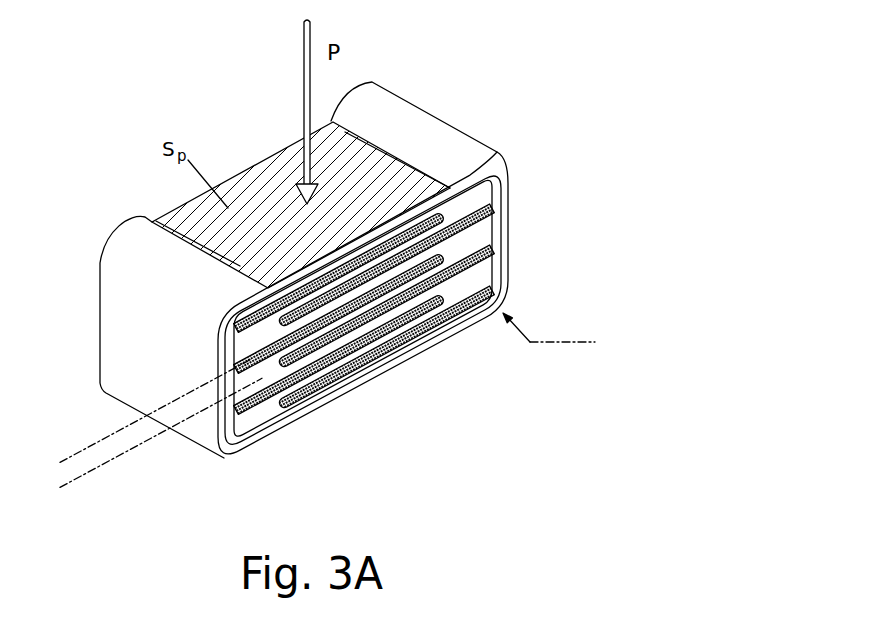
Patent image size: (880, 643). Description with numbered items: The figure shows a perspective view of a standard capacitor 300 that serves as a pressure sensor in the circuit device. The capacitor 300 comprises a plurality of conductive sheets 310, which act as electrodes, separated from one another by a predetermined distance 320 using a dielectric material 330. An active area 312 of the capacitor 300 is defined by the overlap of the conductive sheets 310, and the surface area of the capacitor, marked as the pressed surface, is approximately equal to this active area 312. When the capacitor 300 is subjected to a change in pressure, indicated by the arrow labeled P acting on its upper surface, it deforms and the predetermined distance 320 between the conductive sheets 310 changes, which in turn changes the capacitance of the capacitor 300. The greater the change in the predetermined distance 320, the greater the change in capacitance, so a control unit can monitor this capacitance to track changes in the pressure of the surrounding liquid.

The capacitor 300 is at (310, 271).
The conductive sheets 310 is at (473, 221).
The active area 312 is at (336, 297).
The predetermined distance 320 is at (83, 484).
The dielectric material 330 is at (473, 192).